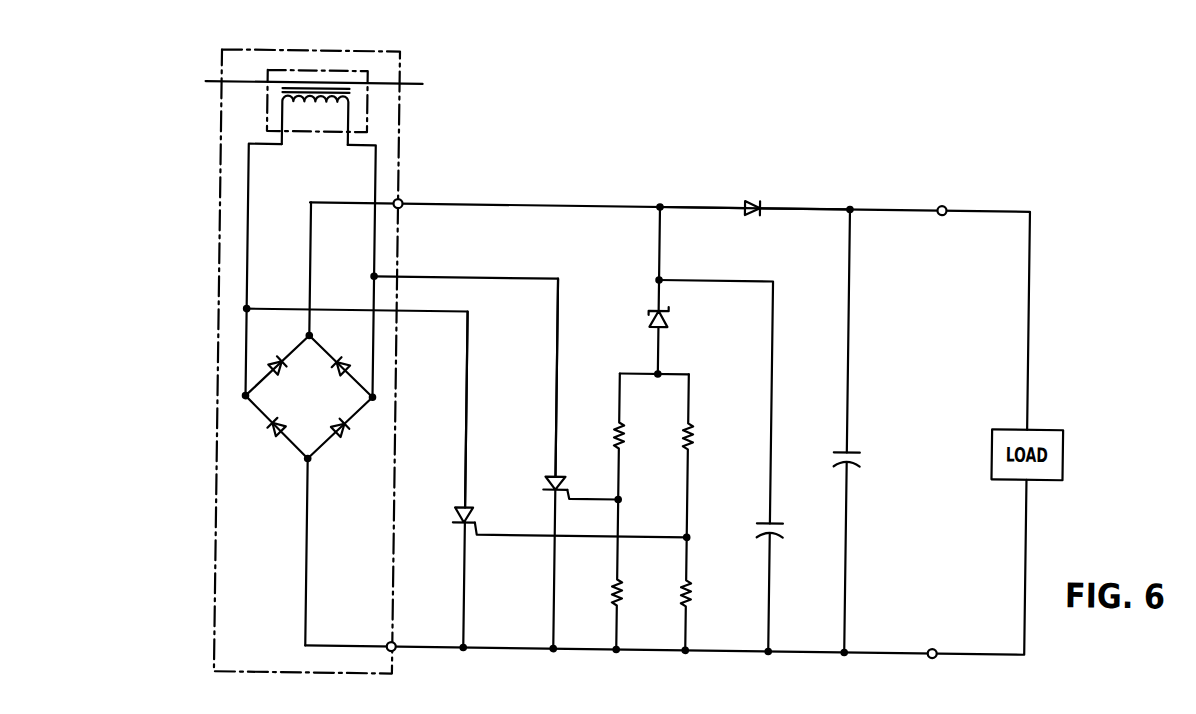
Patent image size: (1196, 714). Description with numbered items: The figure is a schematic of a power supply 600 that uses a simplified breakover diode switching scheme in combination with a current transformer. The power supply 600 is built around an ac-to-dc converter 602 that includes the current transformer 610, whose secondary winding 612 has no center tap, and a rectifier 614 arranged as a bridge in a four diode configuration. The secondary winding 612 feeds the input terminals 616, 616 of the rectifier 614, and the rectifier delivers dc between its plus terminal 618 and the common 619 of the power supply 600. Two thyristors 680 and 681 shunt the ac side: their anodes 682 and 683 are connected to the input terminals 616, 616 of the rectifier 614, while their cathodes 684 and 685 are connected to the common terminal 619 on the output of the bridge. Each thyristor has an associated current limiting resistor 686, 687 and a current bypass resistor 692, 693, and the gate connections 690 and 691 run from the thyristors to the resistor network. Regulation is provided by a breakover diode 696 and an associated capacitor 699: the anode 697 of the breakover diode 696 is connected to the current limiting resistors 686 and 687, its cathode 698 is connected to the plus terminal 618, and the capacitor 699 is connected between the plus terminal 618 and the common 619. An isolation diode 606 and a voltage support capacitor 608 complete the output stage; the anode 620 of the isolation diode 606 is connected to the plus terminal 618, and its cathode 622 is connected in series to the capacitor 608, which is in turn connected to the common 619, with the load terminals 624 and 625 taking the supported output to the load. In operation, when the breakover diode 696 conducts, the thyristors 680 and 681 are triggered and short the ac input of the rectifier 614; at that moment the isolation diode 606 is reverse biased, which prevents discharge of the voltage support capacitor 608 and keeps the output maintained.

The power supply 600 is at (668, 702).
The ac-to-dc converter 602 is at (218, 230).
The isolation diode 606 is at (750, 202).
The voltage support capacitor 608 is at (862, 458).
The current transformer 610 is at (376, 127).
The current transformer secondary winding 612 is at (318, 108).
The rectifier 614 is at (326, 412).
The input terminals 616 is at (249, 313).
The plus terminal 618 is at (400, 203).
The common 619 is at (400, 653).
The anode 620 is at (715, 205).
The cathode 622 is at (806, 205).
The load terminal 624 is at (943, 203).
The load terminal 625 is at (940, 654).
The thyristor 680 is at (550, 483).
The thyristor 681 is at (461, 518).
The anode 682 is at (559, 412).
The anode 683 is at (468, 417).
The cathode 684 is at (557, 628).
The cathode 685 is at (468, 593).
The current limiting resistor 686 is at (692, 442).
The current limiting resistor 687 is at (624, 438).
The gate lead 690 is at (570, 495).
The gate lead 691 is at (482, 532).
The current bypass resistor 692 is at (696, 604).
The current bypass resistor 693 is at (626, 604).
The breakover diode 696 is at (671, 318).
The anode 697 is at (659, 352).
The cathode 698 is at (659, 241).
The capacitor 699 is at (789, 526).